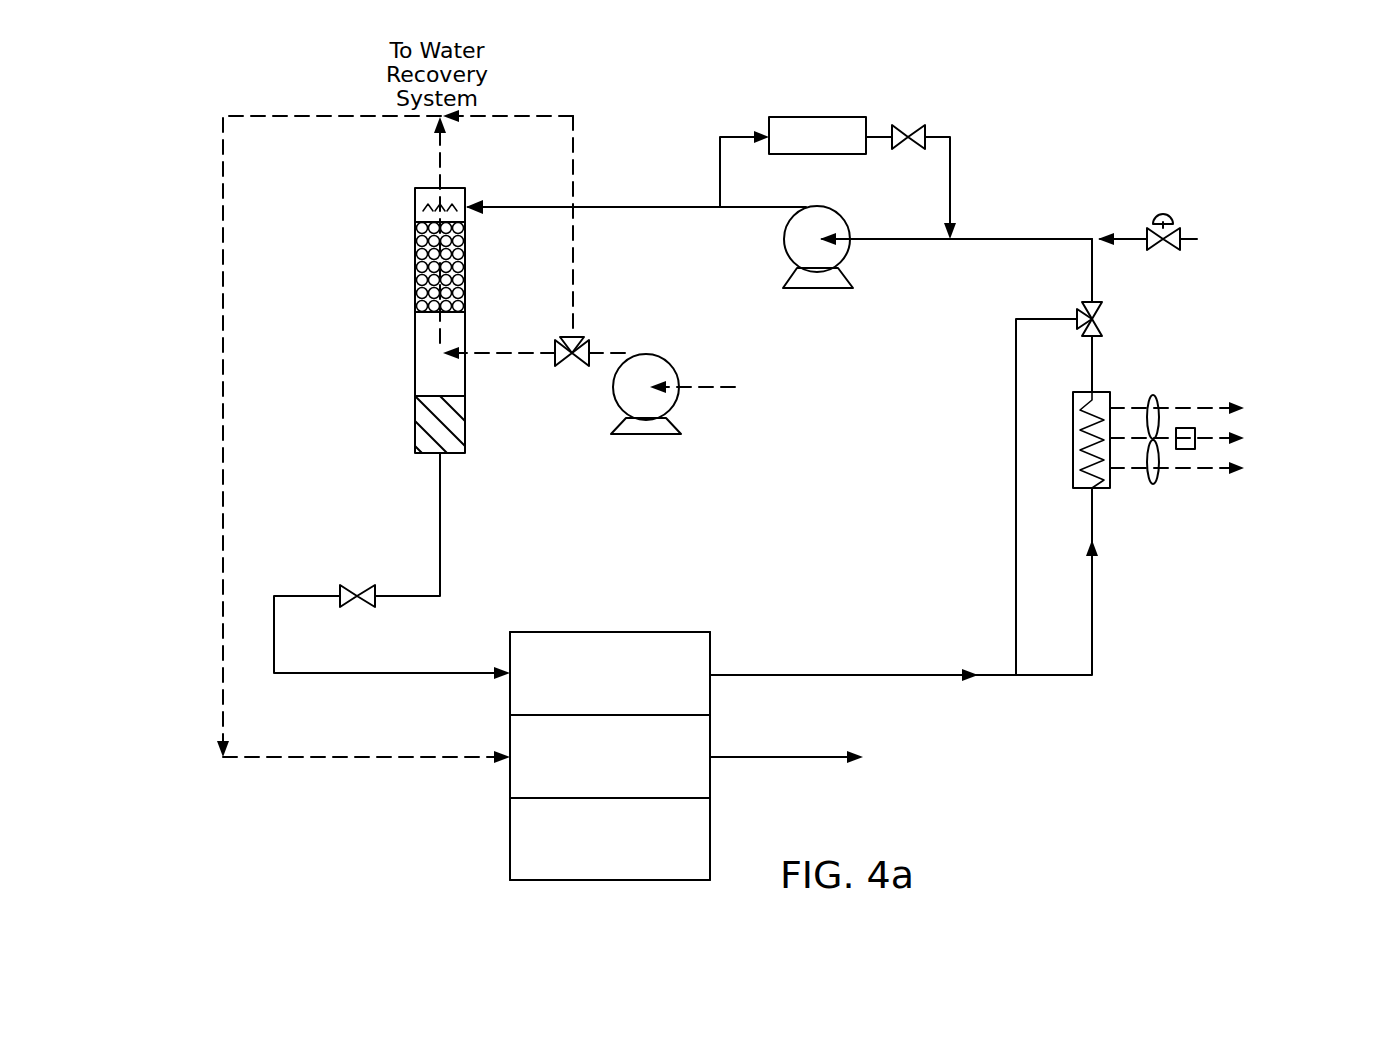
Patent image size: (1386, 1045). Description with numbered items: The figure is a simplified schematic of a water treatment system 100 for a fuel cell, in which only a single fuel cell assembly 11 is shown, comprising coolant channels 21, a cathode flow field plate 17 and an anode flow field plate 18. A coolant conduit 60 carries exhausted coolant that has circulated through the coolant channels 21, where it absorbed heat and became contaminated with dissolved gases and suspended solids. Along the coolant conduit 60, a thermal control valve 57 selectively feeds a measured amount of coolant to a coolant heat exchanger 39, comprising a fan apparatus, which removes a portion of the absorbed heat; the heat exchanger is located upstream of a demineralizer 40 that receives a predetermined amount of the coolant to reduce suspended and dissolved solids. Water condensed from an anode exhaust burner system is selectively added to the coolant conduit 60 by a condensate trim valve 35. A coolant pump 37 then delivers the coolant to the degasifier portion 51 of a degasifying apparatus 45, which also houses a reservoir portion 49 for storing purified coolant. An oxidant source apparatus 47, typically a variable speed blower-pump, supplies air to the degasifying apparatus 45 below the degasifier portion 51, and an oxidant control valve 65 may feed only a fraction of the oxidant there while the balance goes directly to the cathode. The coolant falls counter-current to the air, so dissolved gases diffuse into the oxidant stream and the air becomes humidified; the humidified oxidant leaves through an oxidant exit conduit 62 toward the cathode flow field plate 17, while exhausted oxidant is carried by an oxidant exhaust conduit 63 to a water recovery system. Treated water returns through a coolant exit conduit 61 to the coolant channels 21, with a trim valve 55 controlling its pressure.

The water treatment system 100 is at (193, 147).
The oxidant exit conduit 62 is at (337, 113).
The degasifying apparatus 45 is at (385, 263).
The degasifier portion 51 is at (447, 265).
The reservoir portion 49 is at (455, 432).
The coolant conduit 60 is at (690, 207).
The demineralizer 40 is at (810, 116).
The coolant pump 37 is at (797, 223).
The condensate trim valve 35 is at (1185, 205).
The thermal control valve 57 is at (1066, 310).
The coolant heat exchanger 39 is at (1162, 380).
The oxidant control valve 65 is at (605, 338).
The oxidant source apparatus 47 is at (645, 370).
The coolant exit conduit 61 is at (443, 500).
The trim valve 55 is at (356, 575).
The fuel cell assembly 11 is at (638, 739).
The coolant channels 21 is at (537, 632).
The cathode flow field plate 17 is at (510, 735).
The anode flow field plate 18 is at (510, 850).
The oxidant exhaust conduit 63 is at (768, 757).